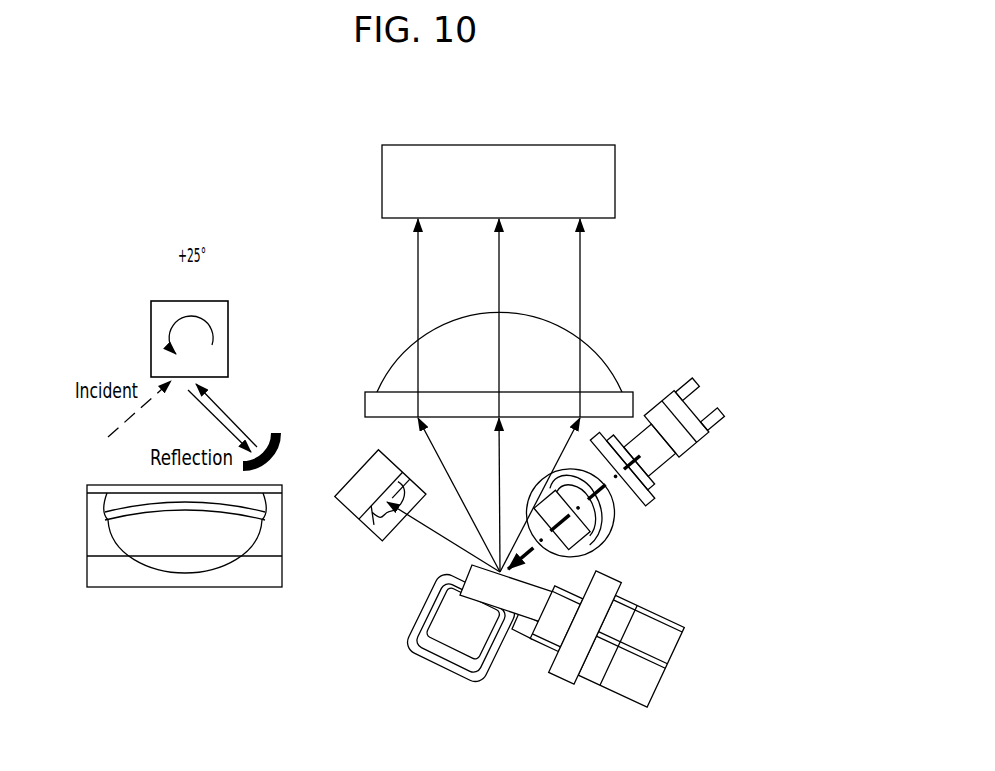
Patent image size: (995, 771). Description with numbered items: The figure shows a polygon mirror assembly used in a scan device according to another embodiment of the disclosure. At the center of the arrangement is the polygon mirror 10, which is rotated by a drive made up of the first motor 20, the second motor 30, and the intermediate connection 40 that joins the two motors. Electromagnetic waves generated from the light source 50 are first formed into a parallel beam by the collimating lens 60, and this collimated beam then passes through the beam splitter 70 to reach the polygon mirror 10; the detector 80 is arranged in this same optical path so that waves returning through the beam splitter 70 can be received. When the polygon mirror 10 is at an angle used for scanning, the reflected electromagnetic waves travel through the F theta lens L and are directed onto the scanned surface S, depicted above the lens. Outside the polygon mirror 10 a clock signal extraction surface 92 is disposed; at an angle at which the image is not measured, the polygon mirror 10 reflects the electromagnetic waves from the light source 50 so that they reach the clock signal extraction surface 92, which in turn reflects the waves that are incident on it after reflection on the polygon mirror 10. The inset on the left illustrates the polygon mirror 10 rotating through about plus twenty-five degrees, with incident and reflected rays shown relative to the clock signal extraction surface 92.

The scan surface S is at (615, 180).
The F theta lens L is at (390, 366).
The polygon mirror 10 is at (149, 317).
The first motor 20 is at (448, 640).
The second motor 30 is at (630, 690).
The intermediate connection 40 is at (563, 673).
The light source 50 is at (658, 447).
The collimating lens 60 is at (617, 490).
The beam splitter 70 is at (608, 508).
The detector 80 is at (613, 538).
The clock signal extraction surface 92 is at (284, 429).